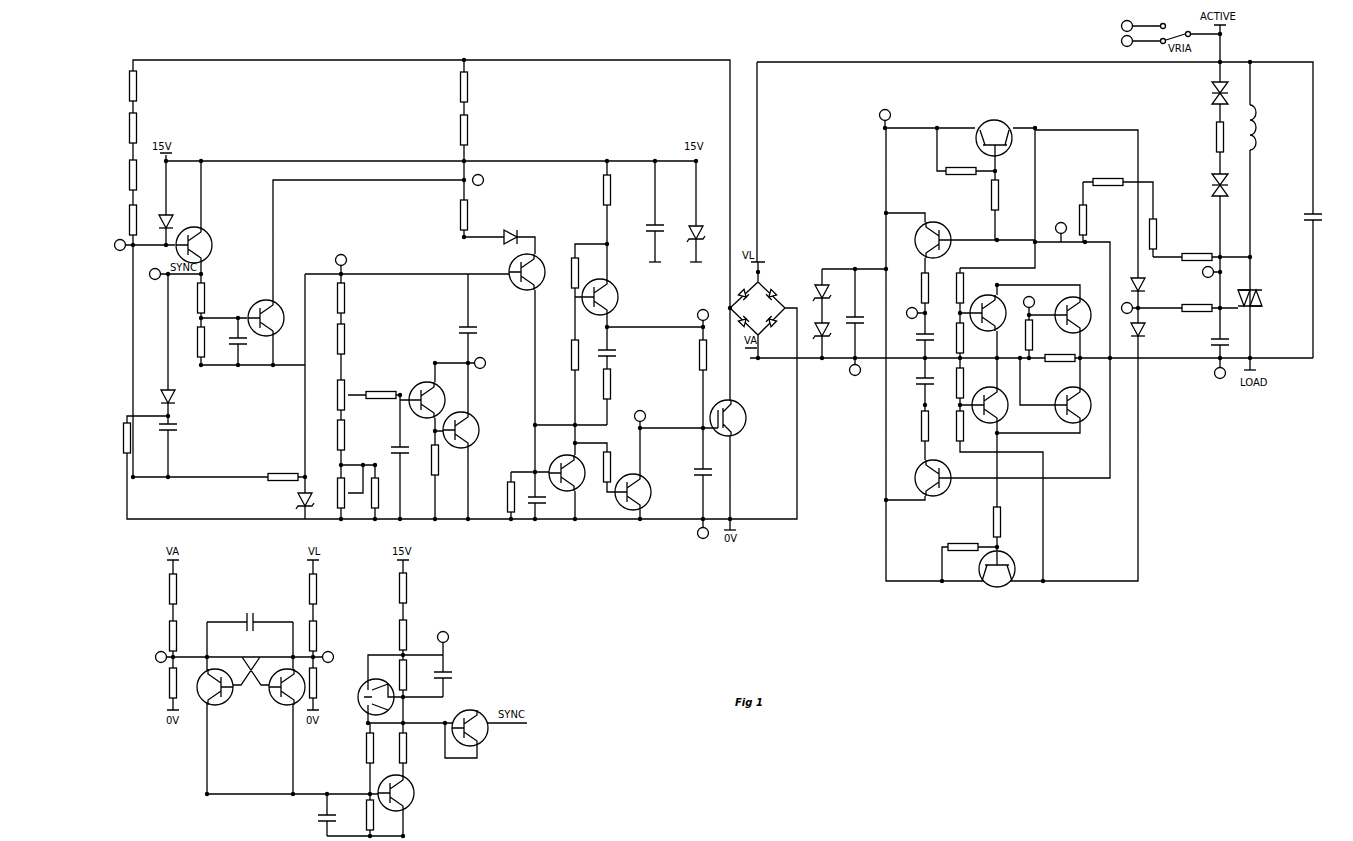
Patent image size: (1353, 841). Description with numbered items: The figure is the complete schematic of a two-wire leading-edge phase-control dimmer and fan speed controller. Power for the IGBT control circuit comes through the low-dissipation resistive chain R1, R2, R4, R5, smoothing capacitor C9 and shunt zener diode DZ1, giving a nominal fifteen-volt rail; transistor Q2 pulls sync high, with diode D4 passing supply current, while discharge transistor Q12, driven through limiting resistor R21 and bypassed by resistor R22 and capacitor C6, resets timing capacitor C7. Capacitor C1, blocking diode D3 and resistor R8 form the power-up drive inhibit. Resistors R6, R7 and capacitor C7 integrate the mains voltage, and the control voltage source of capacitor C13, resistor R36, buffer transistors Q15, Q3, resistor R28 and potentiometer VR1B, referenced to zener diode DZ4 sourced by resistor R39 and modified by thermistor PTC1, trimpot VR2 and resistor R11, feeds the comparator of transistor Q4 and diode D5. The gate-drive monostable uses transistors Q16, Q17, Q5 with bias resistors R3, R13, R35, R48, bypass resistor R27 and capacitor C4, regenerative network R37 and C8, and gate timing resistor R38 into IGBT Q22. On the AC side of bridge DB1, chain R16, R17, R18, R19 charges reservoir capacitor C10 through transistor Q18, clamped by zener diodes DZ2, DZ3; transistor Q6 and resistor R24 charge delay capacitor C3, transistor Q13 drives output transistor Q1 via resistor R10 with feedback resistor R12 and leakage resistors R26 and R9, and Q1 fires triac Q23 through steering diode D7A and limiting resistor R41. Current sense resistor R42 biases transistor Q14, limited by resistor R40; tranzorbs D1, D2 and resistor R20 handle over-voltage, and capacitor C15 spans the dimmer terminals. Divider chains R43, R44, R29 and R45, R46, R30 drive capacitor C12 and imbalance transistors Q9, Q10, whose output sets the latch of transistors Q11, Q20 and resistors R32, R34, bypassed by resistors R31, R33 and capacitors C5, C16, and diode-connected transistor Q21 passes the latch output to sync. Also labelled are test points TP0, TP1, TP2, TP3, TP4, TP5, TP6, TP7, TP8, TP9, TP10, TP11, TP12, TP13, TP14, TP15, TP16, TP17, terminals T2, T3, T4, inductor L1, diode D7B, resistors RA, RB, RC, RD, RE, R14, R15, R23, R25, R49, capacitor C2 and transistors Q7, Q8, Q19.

The resistor R1 is at (144, 86).
The resistor R2 is at (144, 128).
The resistor R4 is at (144, 175).
The resistor R5 is at (144, 220).
The base-emitter shunting diode D4 is at (178, 208).
The transistor Q2 is at (199, 239).
The test point TP1 is at (111, 246).
The test point TP2 is at (153, 269).
The limiting resistor R21 is at (215, 298).
The base-emitter bypass resistor R22 is at (215, 342).
The capacitor C6 is at (246, 348).
The discharge transistor Q12 is at (275, 327).
The blocking diode D3 is at (186, 395).
The capacitor C1 is at (178, 429).
The resistor R8 is at (117, 436).
The resistor R39 is at (283, 467).
The zener diode DZ4 is at (294, 499).
The test point TP3 is at (339, 256).
The resistor R11 is at (352, 298).
The PTC thermistor PTC1 is at (361, 338).
The variable resistor VR1B is at (328, 389).
The resistor R28 is at (381, 385).
The resistor RA 0R RA is at (349, 435).
The trimpot VR2 is at (331, 485).
The resistor R49 1M R49 is at (386, 493).
The capacitor C13 is at (410, 454).
The transistor Q3 is at (427, 393).
The transistor Q15 is at (471, 430).
The resistor R36 is at (449, 460).
The test point TP5 is at (491, 364).
The timing capacitor C7 is at (477, 327).
The test point TP4 is at (489, 181).
The current limiting resistor R6 is at (476, 87).
The current limiting resistor R7 is at (476, 130).
The resistor RD 0R RD is at (456, 215).
The diode D5 is at (520, 229).
The transistor Q4 is at (523, 282).
The resistor RC 0R RC is at (599, 190).
The resistor R3 is at (565, 272).
The transistor Q5 is at (606, 291).
The resistor R35 is at (563, 355).
The capacitor C8 is at (614, 352).
The resistor R37 is at (621, 384).
The test point TP8 is at (640, 411).
The resistor R48 is at (621, 467).
The input transistor Q16 is at (578, 479).
The transistor Q17 is at (645, 492).
The resistor R27 is at (500, 497).
The capacitor C4 is at (615, 485).
The test point TP7 is at (703, 309).
The timing resistor R38 is at (692, 355).
The test point TP0 is at (704, 540).
The IGBT Q22 IRG4BC20S Q22 is at (754, 425).
The smoothing capacitor C9 is at (650, 246).
The zener diode DZ1 is at (688, 248).
The bridge rectifier DB1 DF106 DB1 is at (772, 300).
The zener diode DZ2 is at (831, 291).
The zener diode DZ3 is at (831, 329).
The reservoir capacitor C10 is at (865, 320).
The test point TP9 is at (853, 377).
The test point TP10 is at (884, 109).
The output transistor Q1 is at (1000, 129).
The resistor R9 is at (961, 158).
The current limiting resistor R10 is at (1006, 195).
The transistor Q6 is at (925, 240).
The test point TP11 is at (902, 307).
The current limiting resistor R24 is at (912, 288).
The time-delay capacitor C3 is at (918, 337).
The capacitor C2 10n C2 is at (1066, 362).
The resistor R23 330K R23 is at (913, 426).
The resistor R12 is at (950, 288).
The resistor R26 is at (949, 338).
The resistor R25 100K R25 is at (949, 383).
The resistor R13 is at (952, 426).
The transistor Q13 is at (995, 323).
The transistor Q7 856 Q7 is at (995, 396).
The transistor Q18 is at (924, 478).
The resistor R15 22K R15 is at (1008, 522).
The resistor R14 100K R14 is at (962, 535).
The transistor Q19 846 Q19 is at (1010, 569).
The transistor Q8 856 Q8 is at (1081, 414).
The transistor Q14 is at (1081, 324).
The test point TP12 is at (1027, 295).
The resistor R40 is at (1043, 334).
The current sense resistor R42 is at (1061, 358).
The test point TP13 is at (1059, 223).
The resistor R16 is at (1108, 171).
The resistor R17 is at (1094, 220).
The resistor R18 is at (1164, 234).
The resistor R19 is at (1197, 247).
The steering diode D7A is at (1154, 286).
The diode D7B BAV99 D7B is at (1154, 332).
The test point TP14 is at (1120, 303).
The gate current limiting resistor R41 is at (1197, 298).
The test point TP15 is at (1195, 273).
The triac Q23 is at (1277, 304).
The terminal T4 is at (1219, 381).
The tranzorb D1 is at (1207, 91).
The current limiting resistor R20 is at (1207, 138).
The tranzorb D2 is at (1207, 184).
The inductor L1 10uH L1 is at (1269, 127).
The capacitor C15 is at (1294, 220).
The terminal T3 is at (1136, 27).
The terminal T2 is at (1149, 40).
The resistor R43 is at (163, 589).
The resistor R44 is at (163, 636).
The test point TP16 is at (147, 658).
The resistor R29 is at (161, 683).
The capacitor C12 is at (250, 611).
The transistor Q9 is at (221, 697).
The transistor Q10 is at (281, 697).
The resistor R45 is at (325, 589).
The resistor R46 is at (325, 636).
The test point TP17 is at (342, 658).
The resistor R30 is at (327, 683).
The resistor RB 0R RB is at (411, 588).
The resistor RE 0R RE is at (411, 635).
The test point TP6 is at (442, 632).
The base-emitter bypass resistor R33 is at (417, 675).
The capacitor C16 is at (453, 675).
The transistor Q11 is at (367, 703).
The resistor R32 is at (381, 748).
The resistor R34 is at (414, 748).
The transistor Q21 is at (479, 735).
The capacitor C5 is at (319, 817).
The base-emitter bypass resistor R31 is at (358, 815).
The transistor Q20 is at (405, 799).